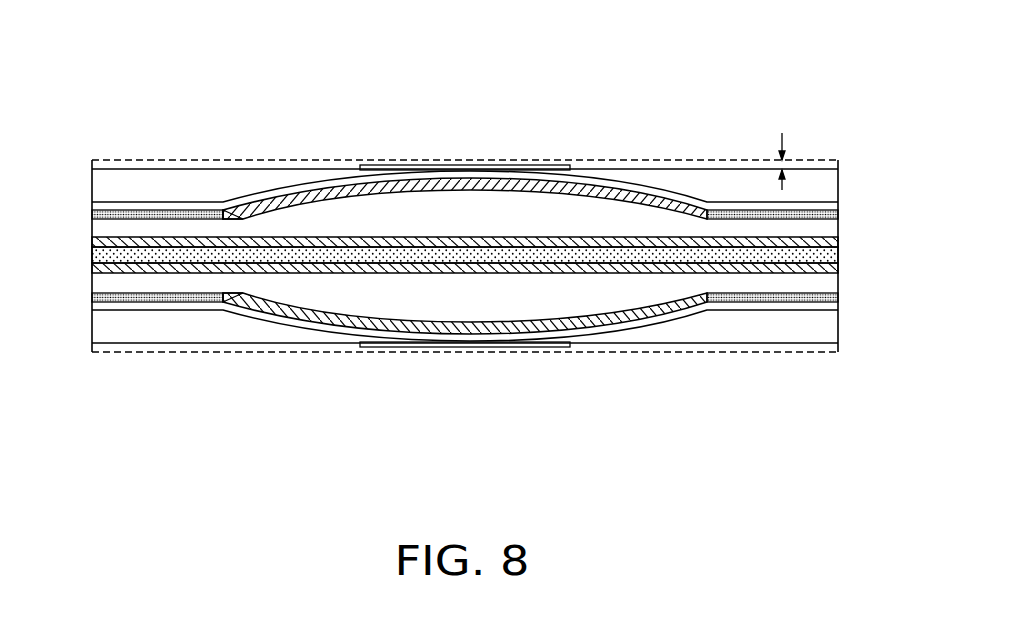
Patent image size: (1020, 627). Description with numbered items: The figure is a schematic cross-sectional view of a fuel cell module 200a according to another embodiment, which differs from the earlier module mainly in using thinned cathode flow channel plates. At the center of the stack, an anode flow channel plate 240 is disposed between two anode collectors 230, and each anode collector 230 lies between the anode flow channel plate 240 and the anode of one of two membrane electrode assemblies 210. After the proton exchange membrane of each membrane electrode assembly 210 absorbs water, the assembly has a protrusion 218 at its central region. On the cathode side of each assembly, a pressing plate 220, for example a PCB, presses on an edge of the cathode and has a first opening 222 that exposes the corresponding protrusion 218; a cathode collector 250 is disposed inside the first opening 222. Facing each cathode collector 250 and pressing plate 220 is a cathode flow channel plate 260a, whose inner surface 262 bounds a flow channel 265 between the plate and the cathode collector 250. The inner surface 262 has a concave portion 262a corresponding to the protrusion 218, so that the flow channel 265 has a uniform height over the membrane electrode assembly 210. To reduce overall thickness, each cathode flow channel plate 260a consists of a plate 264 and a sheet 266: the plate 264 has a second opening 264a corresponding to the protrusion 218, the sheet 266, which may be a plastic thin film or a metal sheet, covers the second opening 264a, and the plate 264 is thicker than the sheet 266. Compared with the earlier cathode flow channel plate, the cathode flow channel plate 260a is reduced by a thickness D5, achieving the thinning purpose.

The fuel cell module 200a is at (823, 465).
The membrane electrode assembly 210 is at (817, 227).
The protrusion 218 is at (465, 259).
The pressing plate 220 is at (840, 212).
The first opening 222 is at (239, 257).
The anode collector 230 is at (822, 242).
The anode flow channel plate 240 is at (813, 255).
The cathode collector 250 is at (688, 257).
The cathode flow channel plate 260a is at (513, 76).
The inner surface 262 is at (465, 257).
The concave portion 262a is at (284, 257).
The plate 264 is at (465, 257).
The second opening 264a is at (395, 256).
The flow channel 265 is at (69, 257).
The sheet 266 is at (465, 257).
The thickness D5 is at (786, 160).